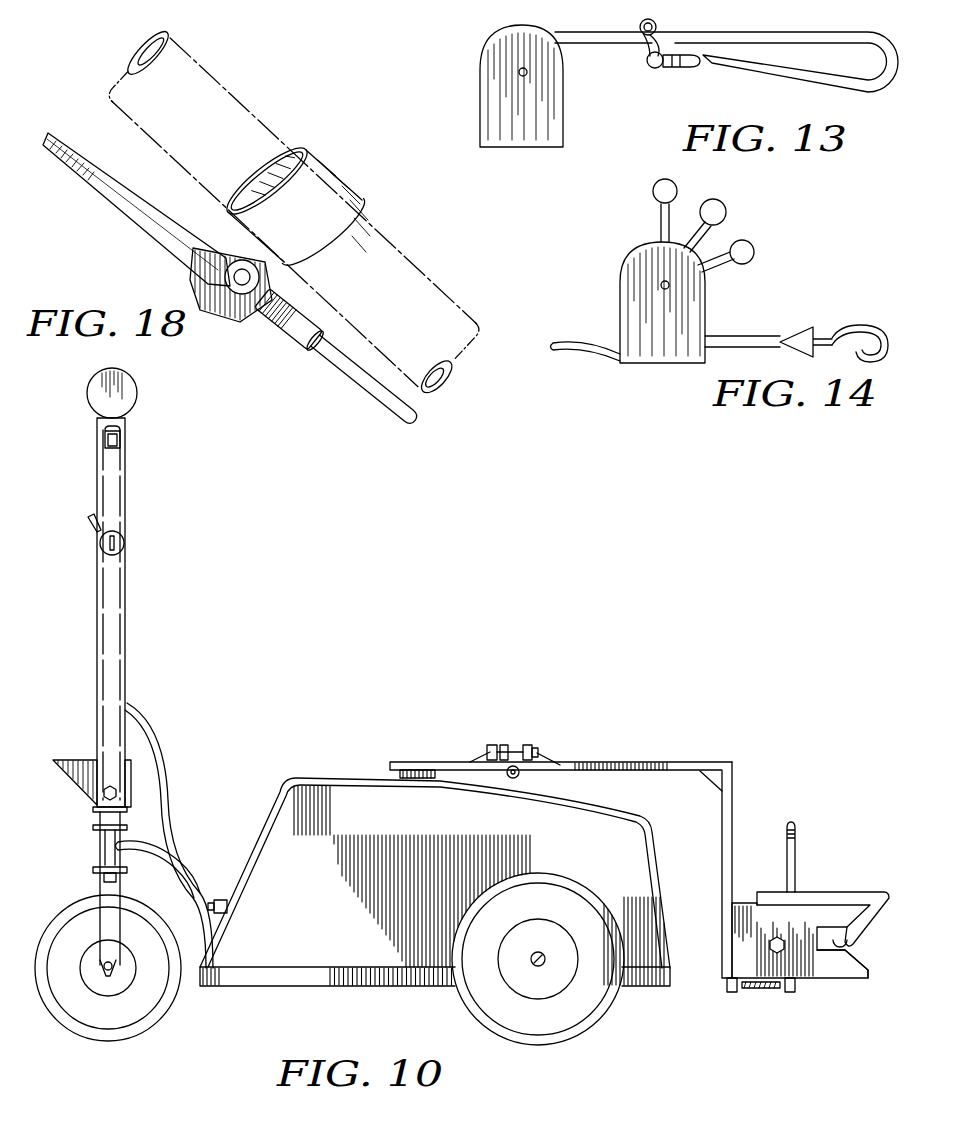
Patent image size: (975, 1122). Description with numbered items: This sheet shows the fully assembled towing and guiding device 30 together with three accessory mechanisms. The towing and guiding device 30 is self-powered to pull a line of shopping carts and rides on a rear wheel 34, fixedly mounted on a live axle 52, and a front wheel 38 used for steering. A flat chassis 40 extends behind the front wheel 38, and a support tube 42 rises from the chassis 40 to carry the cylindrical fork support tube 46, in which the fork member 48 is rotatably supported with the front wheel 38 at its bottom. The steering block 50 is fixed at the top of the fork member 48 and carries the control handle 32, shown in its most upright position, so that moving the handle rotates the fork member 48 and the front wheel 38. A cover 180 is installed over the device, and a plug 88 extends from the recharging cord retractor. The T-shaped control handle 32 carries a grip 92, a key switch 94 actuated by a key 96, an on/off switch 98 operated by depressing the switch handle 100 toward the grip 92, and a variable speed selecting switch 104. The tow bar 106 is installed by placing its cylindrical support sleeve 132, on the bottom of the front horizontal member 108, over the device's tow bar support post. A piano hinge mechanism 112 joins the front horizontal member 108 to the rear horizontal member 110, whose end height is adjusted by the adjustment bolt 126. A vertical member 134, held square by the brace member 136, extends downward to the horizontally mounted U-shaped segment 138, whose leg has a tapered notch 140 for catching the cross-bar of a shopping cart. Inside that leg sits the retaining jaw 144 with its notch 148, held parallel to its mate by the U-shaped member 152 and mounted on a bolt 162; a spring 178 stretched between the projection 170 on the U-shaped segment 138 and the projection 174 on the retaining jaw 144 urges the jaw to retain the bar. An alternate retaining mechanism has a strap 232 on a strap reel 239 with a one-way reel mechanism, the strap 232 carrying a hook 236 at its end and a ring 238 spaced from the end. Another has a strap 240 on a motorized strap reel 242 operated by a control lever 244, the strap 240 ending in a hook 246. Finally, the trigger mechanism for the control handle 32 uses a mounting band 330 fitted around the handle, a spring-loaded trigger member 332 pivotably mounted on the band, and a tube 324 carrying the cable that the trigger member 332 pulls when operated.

In FIG. 10, the towing and guiding device 30 is at (283, 1000).
In FIG. 18, the control handle 32 is at (385, 238).
In FIG. 10, the control handle 32 is at (110, 608).
In FIG. 10, the rear wheel 34 is at (500, 1015).
In FIG. 10, the front wheel 38 is at (68, 1012).
In FIG. 10, the chassis 40 is at (378, 988).
In FIG. 10, the support tube 42 is at (185, 890).
In FIG. 10, the fork support tube 46 is at (100, 850).
In FIG. 10, the fork member 48 is at (100, 885).
In FIG. 10, the steering block 50 is at (83, 778).
In FIG. 10, the live axle 52 is at (548, 946).
In FIG. 10, the plug 88 is at (222, 898).
In FIG. 10, the grip 92 is at (90, 402).
In FIG. 10, the key switch 94 is at (124, 548).
In FIG. 10, the key 96 is at (100, 548).
In FIG. 10, the on/off switch 98 is at (122, 432).
In FIG. 10, the switch handle 100 is at (106, 440).
In FIG. 10, the variable speed selecting switch 104 is at (92, 521).
In FIG. 10, the tow bar 106 is at (606, 846).
In FIG. 10, the front horizontal member 108 is at (425, 761).
In FIG. 10, the rear horizontal member 110 is at (608, 762).
In FIG. 10, the piano hinge mechanism 112 is at (520, 775).
In FIG. 10, the adjustment bolt 126 is at (493, 735).
In FIG. 10, the cylindrical support sleeve 132 is at (400, 773).
In FIG. 10, the vertical member 134 is at (734, 800).
In FIG. 10, the brace member 136 is at (712, 783).
In FIG. 10, the U-shaped segment 138 is at (737, 945).
In FIG. 10, the notch 140 is at (825, 952).
In FIG. 10, the retaining jaw 144 is at (836, 892).
In FIG. 10, the notch 148 is at (850, 940).
In FIG. 10, the U-shaped member 152 is at (796, 835).
In FIG. 10, the bolt 162 is at (796, 930).
In FIG. 10, the projection 170 is at (730, 992).
In FIG. 10, the projection 174 is at (793, 992).
In FIG. 10, the spring 178 is at (760, 988).
In FIG. 10, the cover 180 is at (268, 793).
In FIG. 13, the strap 232 is at (580, 44).
In FIG. 13, the hook 236 is at (672, 68).
In FIG. 13, the ring 238 is at (650, 60).
In FIG. 13, the block 239 is at (560, 110).
In FIG. 14, the strap 240 is at (730, 335).
In FIG. 14, the strap reel 242 is at (635, 318).
In FIG. 14, the control lever 244 is at (727, 216).
In FIG. 14, the hook 246 is at (852, 338).
In FIG. 18, the tube 324 is at (342, 350).
In FIG. 18, the mounting band 330 is at (318, 165).
In FIG. 18, the trigger member 332 is at (148, 228).